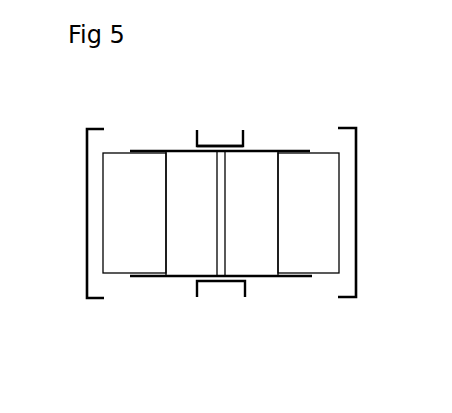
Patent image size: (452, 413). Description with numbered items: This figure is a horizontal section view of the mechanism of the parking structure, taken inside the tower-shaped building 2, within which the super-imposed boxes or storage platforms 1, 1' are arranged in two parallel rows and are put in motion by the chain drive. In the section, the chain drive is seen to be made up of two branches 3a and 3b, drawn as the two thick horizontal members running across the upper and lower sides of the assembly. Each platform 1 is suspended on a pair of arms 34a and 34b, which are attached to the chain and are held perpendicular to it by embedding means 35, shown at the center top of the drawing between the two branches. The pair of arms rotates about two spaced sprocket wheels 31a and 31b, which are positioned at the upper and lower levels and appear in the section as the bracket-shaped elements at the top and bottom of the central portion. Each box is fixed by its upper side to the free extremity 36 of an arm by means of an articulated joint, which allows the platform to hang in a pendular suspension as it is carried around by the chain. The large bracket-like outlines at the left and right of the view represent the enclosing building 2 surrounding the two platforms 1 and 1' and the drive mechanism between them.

The storage platform 1 is at (94, 213).
The storage platform 1' is at (353, 213).
The building 2 is at (357, 190).
The chain drive branch 3a is at (247, 277).
The chain drive branch 3b is at (249, 150).
The sprocket wheel 31a is at (228, 282).
The sprocket wheel 31b is at (229, 146).
The arm 34a is at (175, 277).
The arm 34b is at (178, 151).
The embedding means 35 is at (215, 146).
The free extremity 36 is at (310, 150).